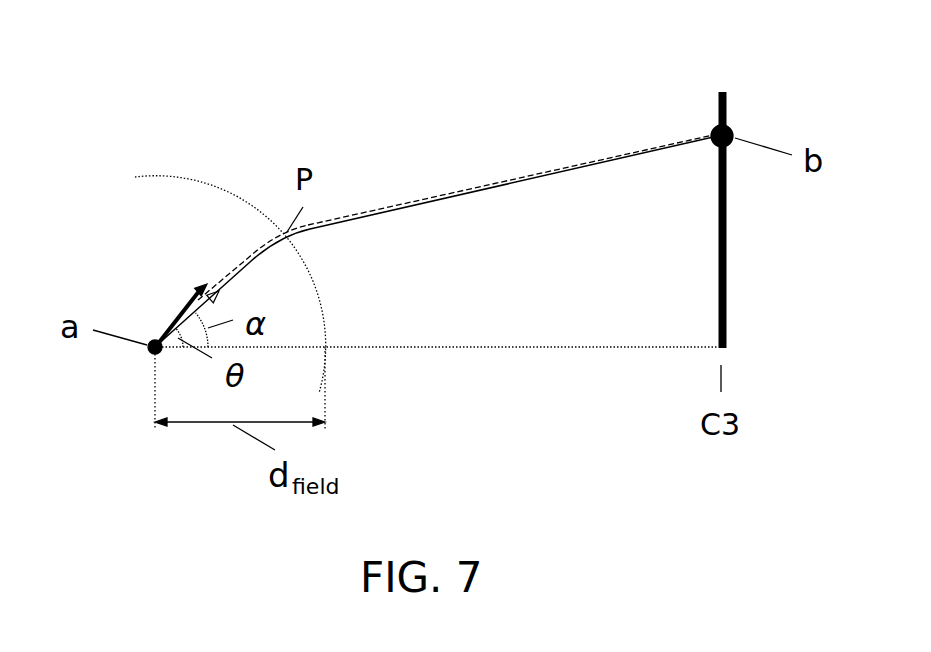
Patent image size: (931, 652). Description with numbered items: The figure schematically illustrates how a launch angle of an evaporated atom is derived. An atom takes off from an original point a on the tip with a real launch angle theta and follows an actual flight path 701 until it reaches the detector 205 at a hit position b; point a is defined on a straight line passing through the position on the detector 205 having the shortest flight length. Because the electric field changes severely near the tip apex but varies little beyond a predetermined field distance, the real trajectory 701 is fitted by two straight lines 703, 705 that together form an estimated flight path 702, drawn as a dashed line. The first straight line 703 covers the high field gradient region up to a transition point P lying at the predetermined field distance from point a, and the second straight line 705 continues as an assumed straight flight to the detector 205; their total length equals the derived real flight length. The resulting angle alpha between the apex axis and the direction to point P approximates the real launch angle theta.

The detector 205 is at (722, 85).
The actual flight path 701 is at (333, 235).
The estimated flight path 702 is at (455, 188).
The first straight line 703 is at (205, 256).
The second straight line 705 is at (377, 194).